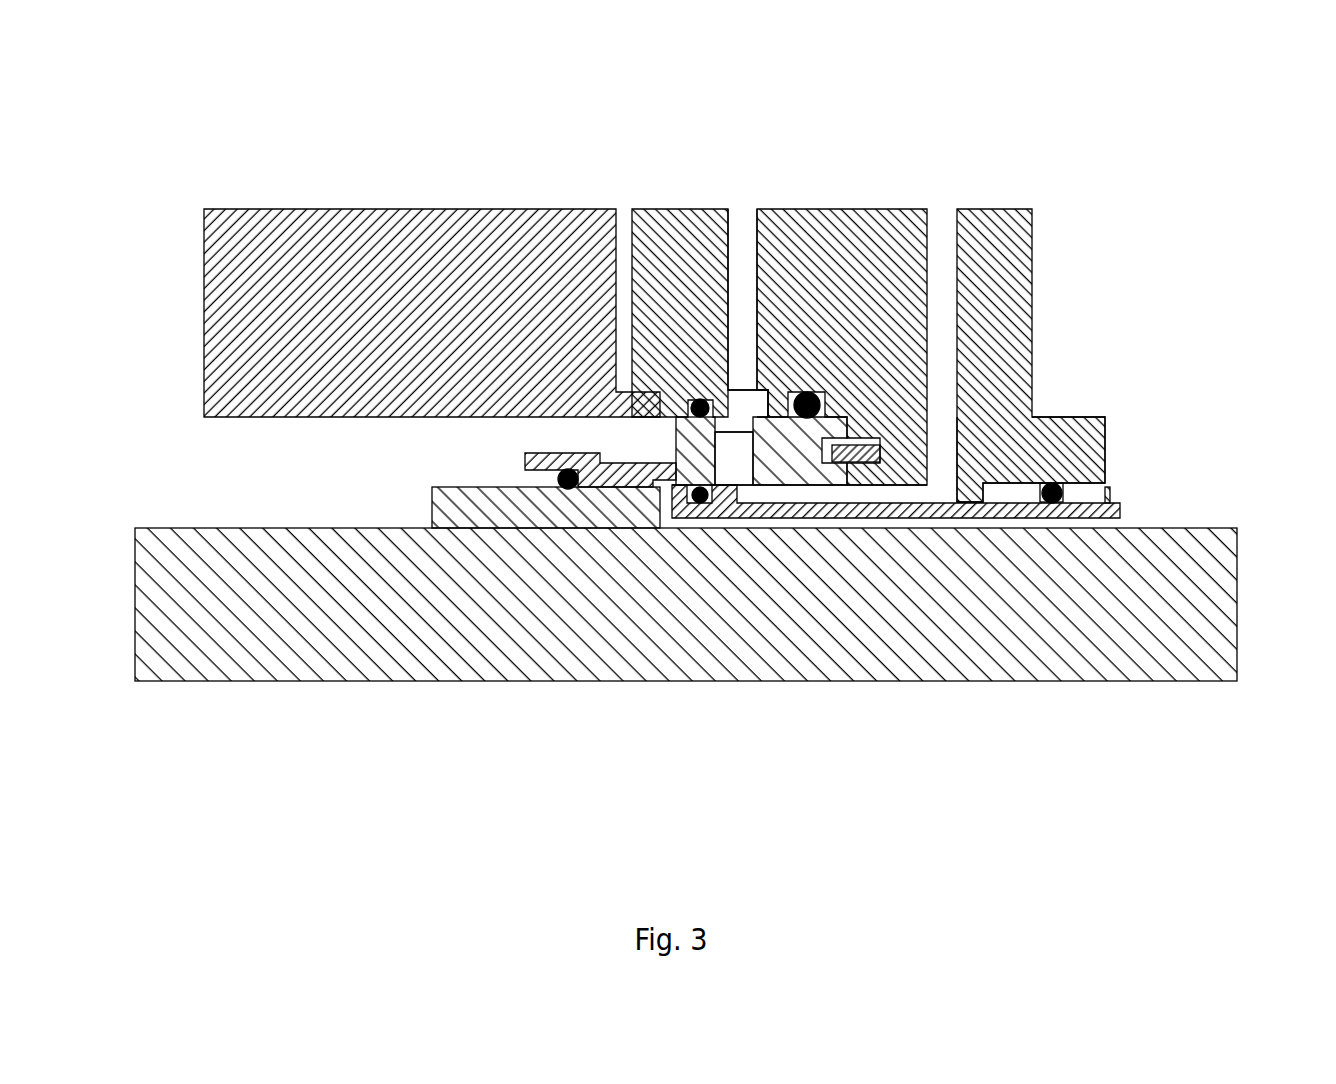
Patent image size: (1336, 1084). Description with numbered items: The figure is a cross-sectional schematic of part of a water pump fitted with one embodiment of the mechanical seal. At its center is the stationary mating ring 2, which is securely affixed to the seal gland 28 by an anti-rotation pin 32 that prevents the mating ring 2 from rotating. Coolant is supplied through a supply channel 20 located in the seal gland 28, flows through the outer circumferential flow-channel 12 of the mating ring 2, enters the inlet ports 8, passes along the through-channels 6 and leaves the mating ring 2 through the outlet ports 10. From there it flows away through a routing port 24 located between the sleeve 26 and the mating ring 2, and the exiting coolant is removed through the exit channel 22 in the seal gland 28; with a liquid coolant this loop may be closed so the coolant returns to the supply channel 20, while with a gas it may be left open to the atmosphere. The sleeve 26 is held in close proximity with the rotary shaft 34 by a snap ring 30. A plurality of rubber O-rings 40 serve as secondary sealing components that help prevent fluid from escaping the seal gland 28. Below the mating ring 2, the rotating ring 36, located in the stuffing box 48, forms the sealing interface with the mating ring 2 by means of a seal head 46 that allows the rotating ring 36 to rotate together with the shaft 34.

The mating ring 2 is at (409, 416).
The through-channels 6 is at (738, 450).
The inlet ports 8 is at (728, 428).
The outlet ports 10 is at (731, 485).
The outer circumferential flow-channel 12 is at (738, 425).
The supply channel 20 is at (743, 225).
The exit channel 22 is at (943, 374).
The routing port 24 is at (767, 492).
The sleeve 26 is at (1120, 511).
The seal gland 28 is at (1023, 208).
The snap ring 30 is at (1110, 488).
The anti-rotation pin 32 is at (863, 457).
The rotary shaft 34 is at (1059, 681).
The rotating ring 36 is at (617, 482).
The rubber O-rings 40 is at (810, 395).
The seal head 46 is at (432, 504).
The stuffing box 48 is at (300, 209).